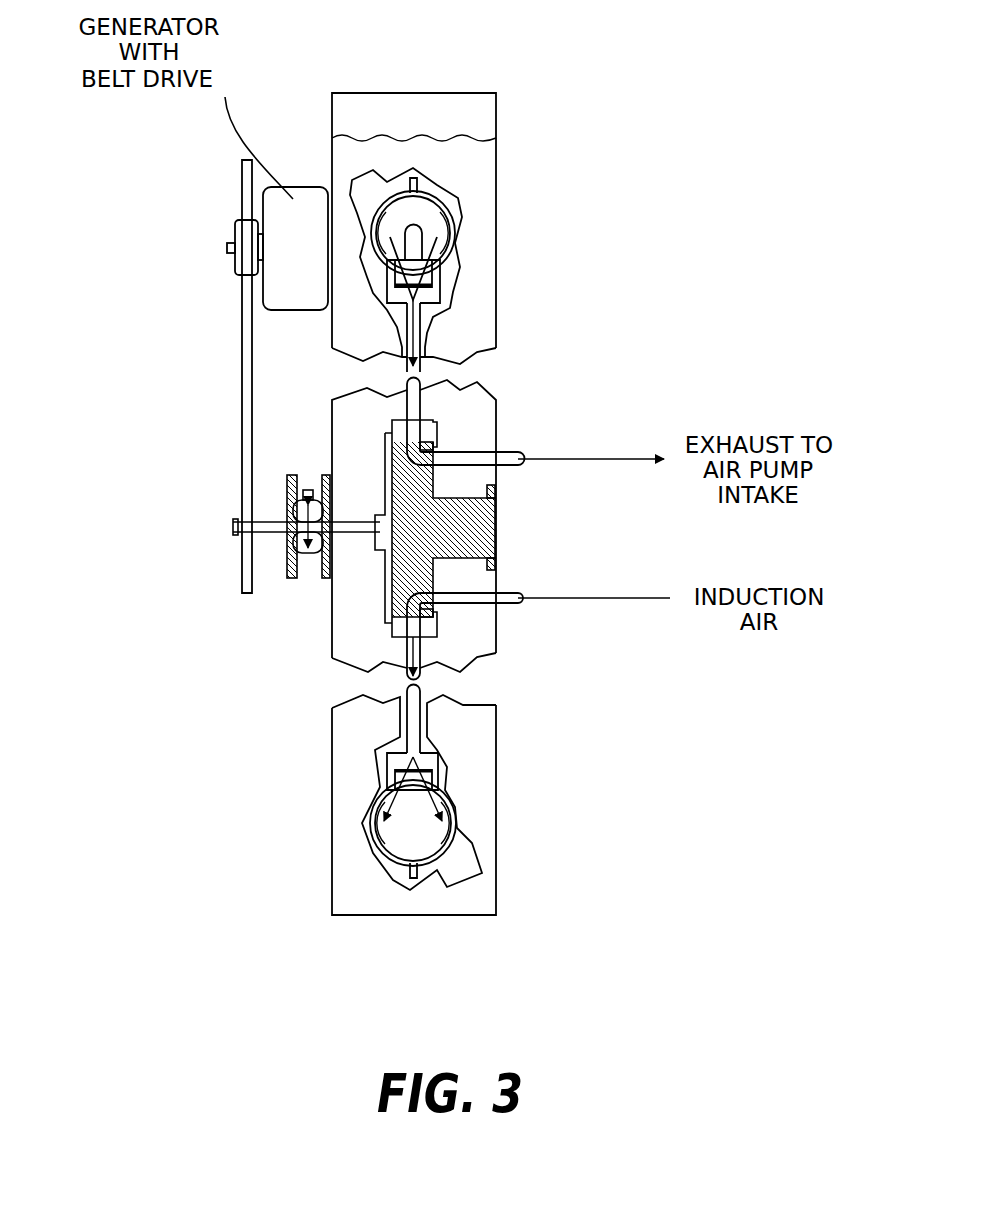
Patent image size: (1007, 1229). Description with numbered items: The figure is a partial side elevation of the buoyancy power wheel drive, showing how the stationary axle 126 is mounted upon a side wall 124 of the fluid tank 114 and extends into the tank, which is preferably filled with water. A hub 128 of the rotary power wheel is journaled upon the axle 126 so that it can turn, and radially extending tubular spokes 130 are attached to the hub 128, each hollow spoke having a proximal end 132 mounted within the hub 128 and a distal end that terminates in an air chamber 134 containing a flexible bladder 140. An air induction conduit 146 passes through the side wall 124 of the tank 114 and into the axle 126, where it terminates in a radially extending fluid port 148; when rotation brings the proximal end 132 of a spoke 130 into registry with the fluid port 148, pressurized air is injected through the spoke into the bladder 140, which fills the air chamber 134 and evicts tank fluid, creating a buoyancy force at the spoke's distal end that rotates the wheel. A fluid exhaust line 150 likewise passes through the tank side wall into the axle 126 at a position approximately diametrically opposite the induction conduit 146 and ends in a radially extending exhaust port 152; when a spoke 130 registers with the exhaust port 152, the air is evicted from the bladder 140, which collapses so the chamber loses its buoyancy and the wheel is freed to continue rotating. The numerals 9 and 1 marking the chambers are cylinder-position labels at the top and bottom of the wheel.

The fluid tank 114 is at (497, 192).
The cylinder of upper engine 9 is at (406, 224).
The flexible bladder 140 is at (422, 233).
The side wall 124 is at (497, 313).
The exhaust port 152 is at (387, 431).
The axle 126 is at (486, 545).
The hub 128 is at (425, 430).
The tubular spoke 130 is at (421, 381).
The fluid exhaust line 150 is at (517, 455).
The induction conduit 146 is at (517, 593).
The fluid port 148 is at (440, 620).
The air chamber 134 is at (463, 823).
The proximal end 132 is at (390, 745).
The cylinder of lower engine 1 is at (419, 829).